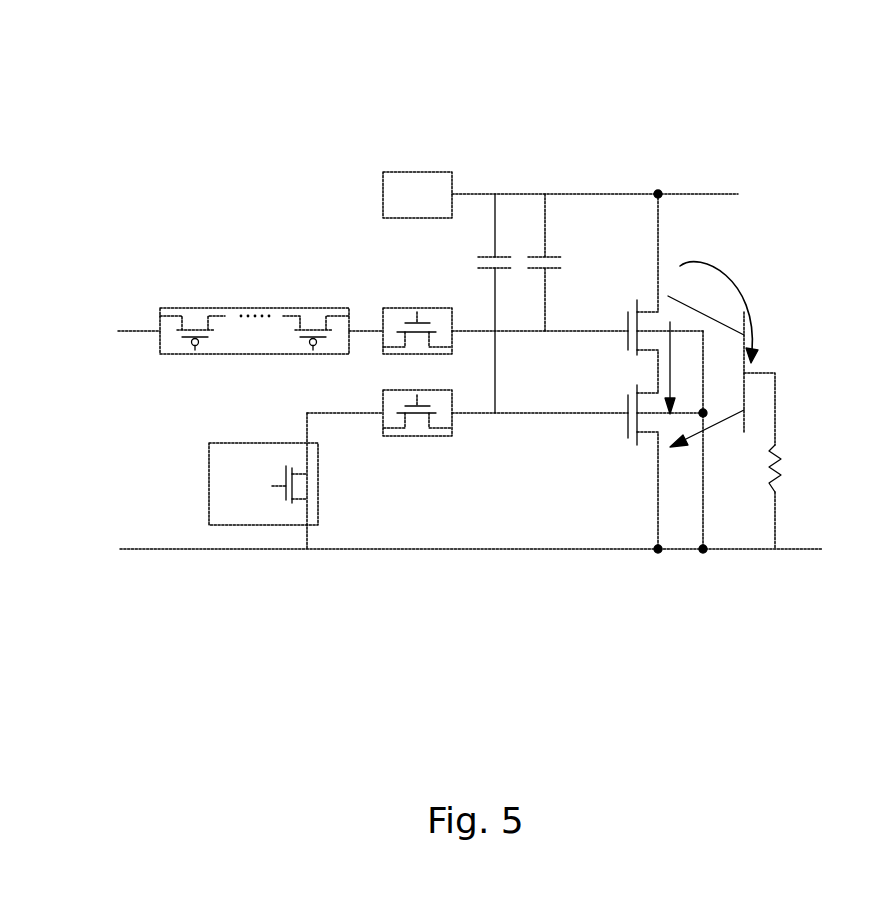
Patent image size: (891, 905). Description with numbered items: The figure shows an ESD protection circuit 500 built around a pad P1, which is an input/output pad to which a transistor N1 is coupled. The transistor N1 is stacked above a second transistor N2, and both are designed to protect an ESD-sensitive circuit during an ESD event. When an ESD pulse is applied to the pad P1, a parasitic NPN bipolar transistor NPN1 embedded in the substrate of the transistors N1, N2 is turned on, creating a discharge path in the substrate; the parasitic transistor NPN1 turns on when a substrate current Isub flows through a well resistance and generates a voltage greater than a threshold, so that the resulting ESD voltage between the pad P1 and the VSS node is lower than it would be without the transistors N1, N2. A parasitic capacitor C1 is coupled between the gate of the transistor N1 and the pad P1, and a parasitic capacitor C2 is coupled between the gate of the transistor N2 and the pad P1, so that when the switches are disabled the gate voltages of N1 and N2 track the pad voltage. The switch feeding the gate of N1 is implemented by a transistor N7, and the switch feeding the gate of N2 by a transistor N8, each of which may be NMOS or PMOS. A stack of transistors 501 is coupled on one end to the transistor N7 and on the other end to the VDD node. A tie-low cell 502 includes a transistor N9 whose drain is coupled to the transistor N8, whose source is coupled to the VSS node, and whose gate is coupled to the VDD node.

The ESD protection circuit 500 is at (868, 79).
The stack of transistors 501 is at (288, 306).
The tie-low cell 502 is at (209, 497).
The pad P1 is at (560, 195).
The transistor N7 is at (412, 320).
The transistor N8 is at (405, 432).
The transistor N1 is at (661, 291).
The transistor N2 is at (663, 437).
The transistor N9 is at (284, 493).
The parasitic capacitor C1 is at (564, 262).
The parasitic capacitor C2 is at (476, 303).
The parasitic NPN bipolar transistor NPN1 is at (761, 422).
The substrate current Isub is at (750, 312).
The VDD node VDD is at (116, 316).
The VSS node VSS is at (471, 570).